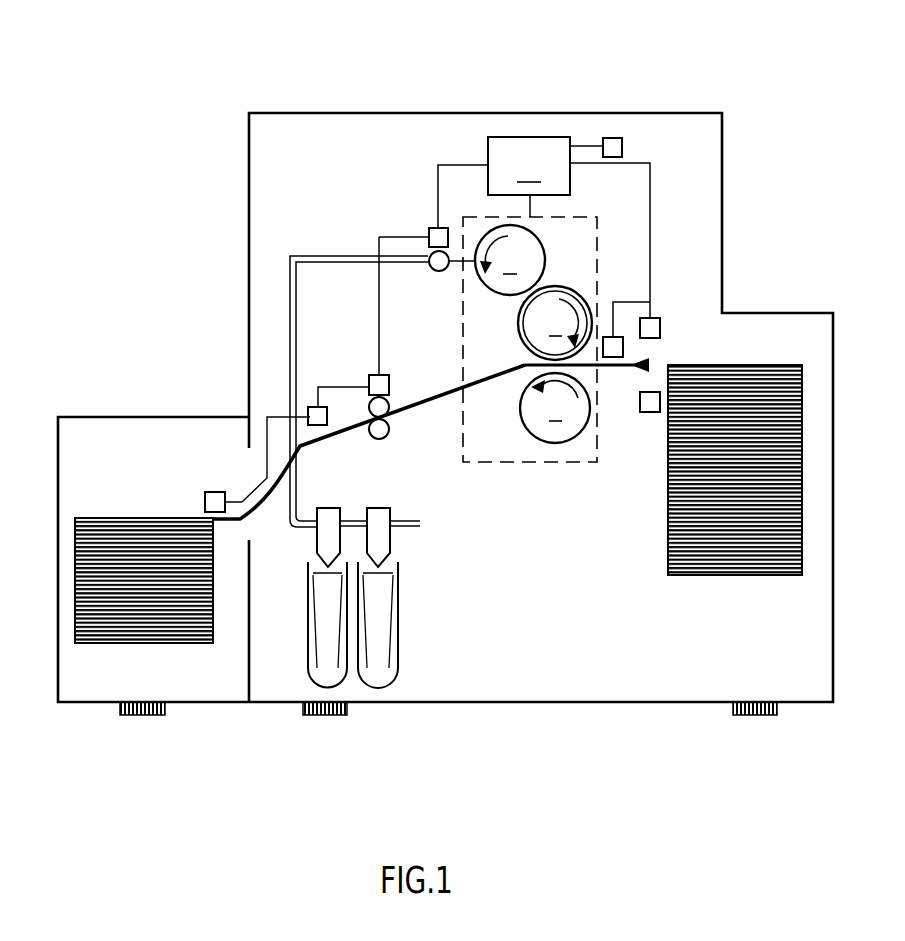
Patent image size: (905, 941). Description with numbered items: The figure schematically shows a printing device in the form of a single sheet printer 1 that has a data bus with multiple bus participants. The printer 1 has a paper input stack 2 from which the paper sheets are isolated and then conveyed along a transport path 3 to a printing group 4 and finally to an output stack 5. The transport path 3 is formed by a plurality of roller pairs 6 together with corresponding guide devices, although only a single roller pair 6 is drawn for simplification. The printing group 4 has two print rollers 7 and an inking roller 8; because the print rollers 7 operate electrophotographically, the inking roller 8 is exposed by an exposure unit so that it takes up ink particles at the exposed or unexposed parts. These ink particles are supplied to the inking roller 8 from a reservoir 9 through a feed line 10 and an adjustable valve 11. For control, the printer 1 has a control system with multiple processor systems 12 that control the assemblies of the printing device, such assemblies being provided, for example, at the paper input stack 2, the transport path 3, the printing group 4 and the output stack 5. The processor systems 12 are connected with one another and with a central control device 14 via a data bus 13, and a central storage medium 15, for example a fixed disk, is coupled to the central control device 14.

The single sheet printer 1 is at (742, 66).
The paper input stack 2 is at (772, 594).
The transport path 3 is at (423, 408).
The printing group 4 is at (530, 463).
The output stack 5 is at (76, 662).
The roller pairs 6 is at (364, 421).
The print rollers 7 is at (555, 364).
The inking roller 8 is at (510, 260).
The reservoir 9 is at (318, 654).
The feed line 10 is at (290, 344).
The adjustable valve 11 is at (441, 272).
The processor systems 12 is at (312, 406).
The data bus 13 is at (394, 236).
The central control device 14 is at (544, 227).
The central storage medium 15 is at (623, 147).